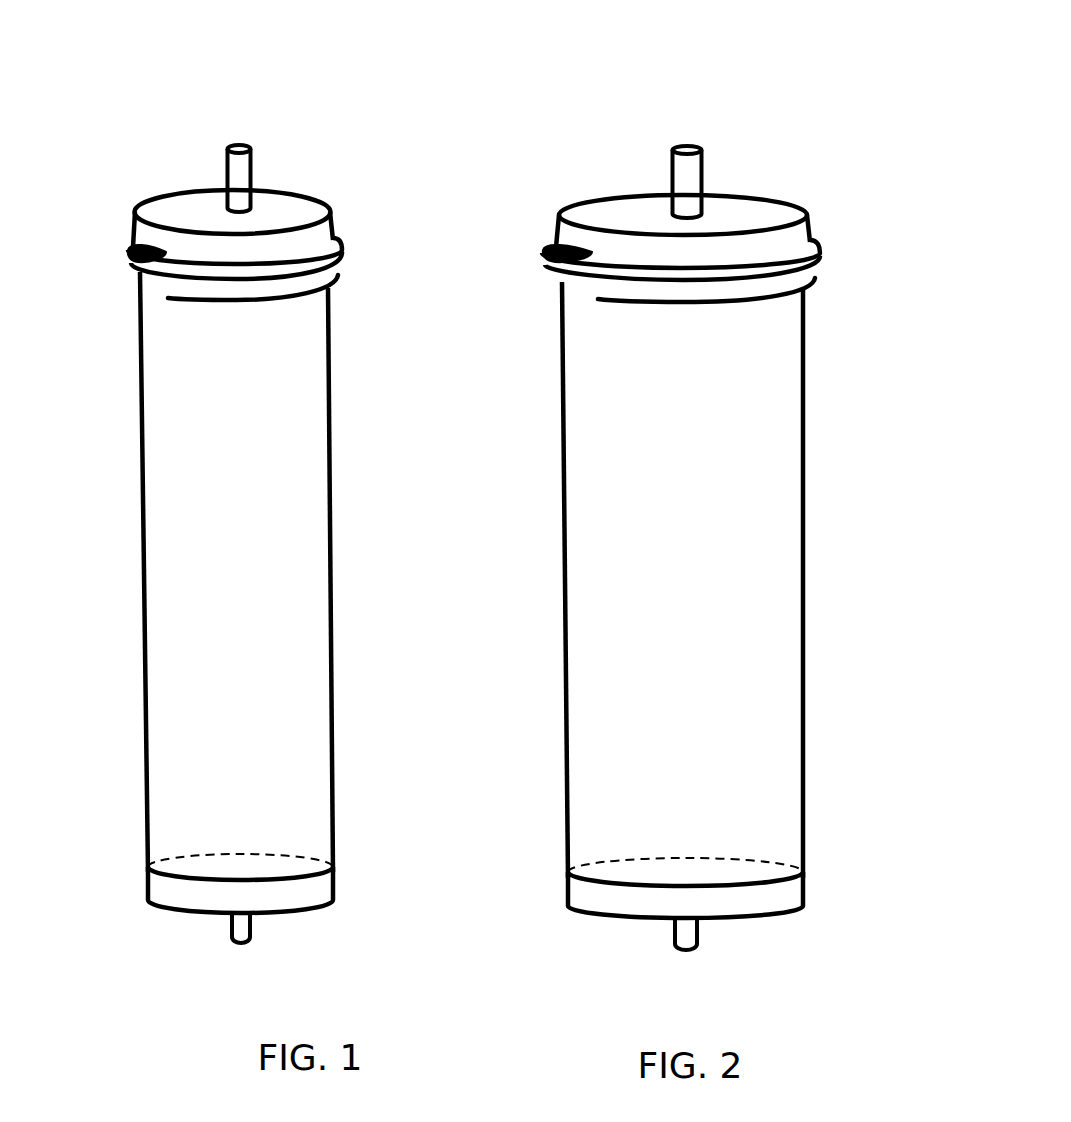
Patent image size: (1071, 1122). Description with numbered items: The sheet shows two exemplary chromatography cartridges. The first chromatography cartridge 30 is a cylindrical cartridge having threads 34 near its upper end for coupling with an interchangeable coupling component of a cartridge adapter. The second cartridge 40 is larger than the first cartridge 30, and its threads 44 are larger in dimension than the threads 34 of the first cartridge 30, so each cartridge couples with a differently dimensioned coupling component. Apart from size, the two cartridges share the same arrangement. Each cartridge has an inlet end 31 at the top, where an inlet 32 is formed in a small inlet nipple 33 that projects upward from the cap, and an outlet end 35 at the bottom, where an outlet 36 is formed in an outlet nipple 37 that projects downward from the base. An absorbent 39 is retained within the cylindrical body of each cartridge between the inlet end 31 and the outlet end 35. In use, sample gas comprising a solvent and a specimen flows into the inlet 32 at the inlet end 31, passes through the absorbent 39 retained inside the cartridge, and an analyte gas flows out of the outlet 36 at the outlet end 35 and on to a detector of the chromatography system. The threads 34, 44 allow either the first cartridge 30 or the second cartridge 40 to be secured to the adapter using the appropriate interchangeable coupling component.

In FIG. 1, the chromatography cartridge 30 is at (190, 120).
In FIG. 1, the inlet end 31 is at (185, 212).
In FIG. 2, the inlet end 31 is at (598, 212).
In FIG. 1, the inlet 32 is at (244, 146).
In FIG. 2, the inlet 32 is at (690, 150).
In FIG. 1, the inlet nipple 33 is at (250, 188).
In FIG. 2, the inlet nipple 33 is at (702, 190).
In FIG. 1, the threads 34 is at (133, 250).
In FIG. 1, the outlet end 35 is at (335, 887).
In FIG. 2, the outlet end 35 is at (813, 892).
In FIG. 1, the outlet 36 is at (243, 938).
In FIG. 2, the outlet 36 is at (700, 950).
In FIG. 1, the outlet nipple 37 is at (232, 924).
In FIG. 2, the outlet nipple 37 is at (676, 933).
In FIG. 1, the absorbent 39 is at (170, 540).
In FIG. 2, the absorbent 39 is at (585, 530).
In FIG. 2, the second cartridge 40 is at (605, 122).
In FIG. 2, the threads 44 is at (552, 250).